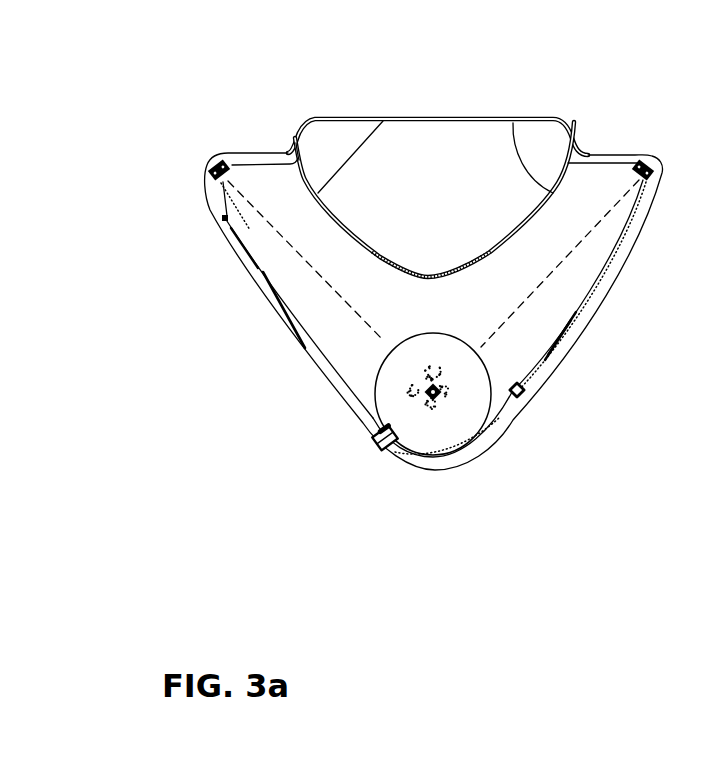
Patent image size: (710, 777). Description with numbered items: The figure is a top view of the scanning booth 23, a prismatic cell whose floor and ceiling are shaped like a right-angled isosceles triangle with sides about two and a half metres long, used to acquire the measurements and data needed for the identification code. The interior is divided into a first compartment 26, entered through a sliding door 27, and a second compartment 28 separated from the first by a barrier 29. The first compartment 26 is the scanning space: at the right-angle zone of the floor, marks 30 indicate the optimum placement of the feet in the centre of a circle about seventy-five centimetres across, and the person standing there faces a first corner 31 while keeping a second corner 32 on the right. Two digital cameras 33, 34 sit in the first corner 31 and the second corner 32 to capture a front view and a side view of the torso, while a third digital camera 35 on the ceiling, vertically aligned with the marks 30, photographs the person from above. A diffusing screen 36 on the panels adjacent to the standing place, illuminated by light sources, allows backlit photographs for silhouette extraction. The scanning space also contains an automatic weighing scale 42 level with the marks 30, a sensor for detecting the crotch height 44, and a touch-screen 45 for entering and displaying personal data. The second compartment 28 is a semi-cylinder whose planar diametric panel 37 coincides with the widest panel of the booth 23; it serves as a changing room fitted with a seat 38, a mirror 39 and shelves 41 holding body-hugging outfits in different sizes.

The booth 23 is at (168, 392).
The first compartment 26 is at (273, 188).
The sliding door 27 is at (277, 307).
The second compartment 28 is at (482, 170).
The barrier 29 is at (424, 273).
The marks 30 is at (440, 391).
The first corner 31 is at (225, 217).
The second corner 32 is at (610, 174).
The digital camera 33 is at (213, 166).
The digital camera 34 is at (652, 164).
The third digital camera 35 is at (358, 440).
The diffusing screen 36 is at (432, 470).
The planar diametric panel 37 is at (358, 118).
The seat 38 is at (542, 147).
The mirror 39 is at (424, 118).
The shelves 41 is at (317, 143).
The automatic weighing scale 42 is at (426, 395).
The sensor for detecting the crotch height 44 is at (527, 391).
The touch-screen 45 is at (366, 410).